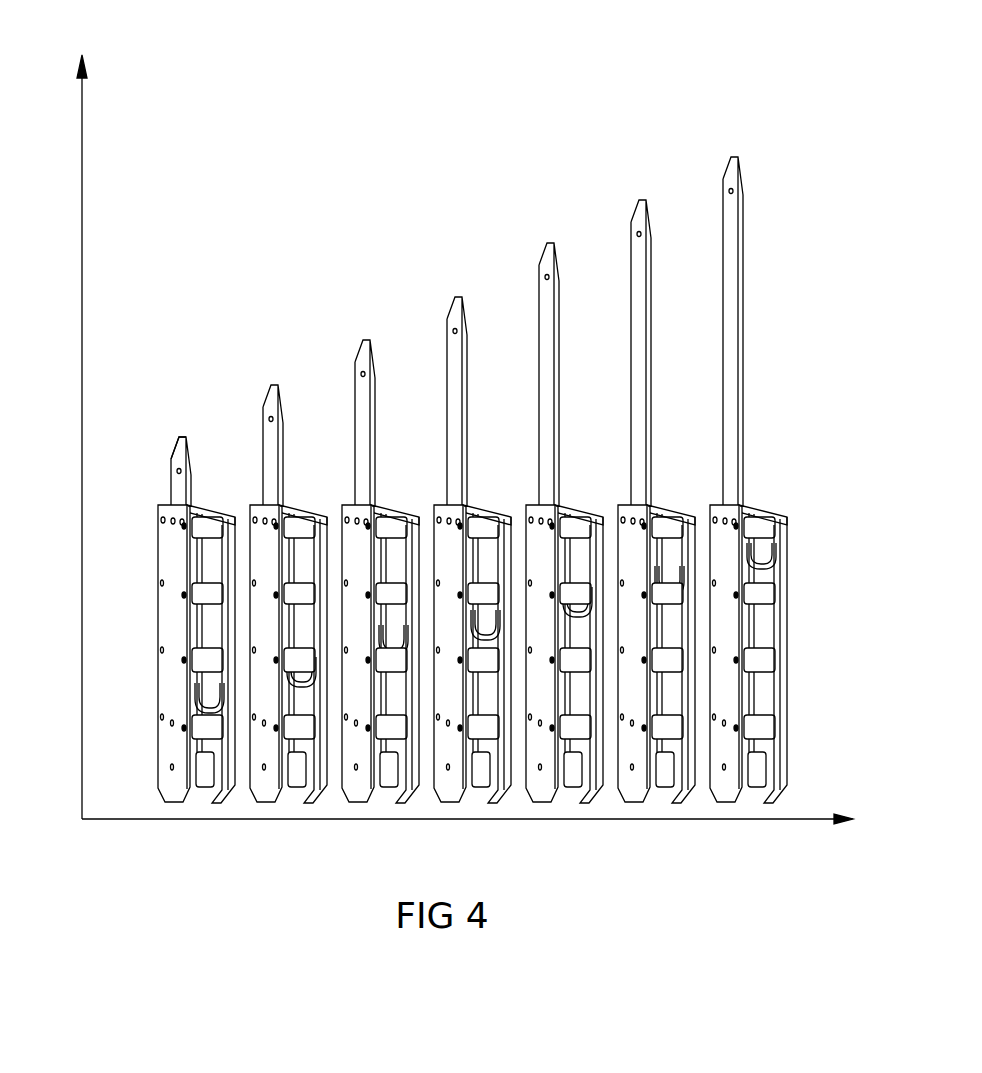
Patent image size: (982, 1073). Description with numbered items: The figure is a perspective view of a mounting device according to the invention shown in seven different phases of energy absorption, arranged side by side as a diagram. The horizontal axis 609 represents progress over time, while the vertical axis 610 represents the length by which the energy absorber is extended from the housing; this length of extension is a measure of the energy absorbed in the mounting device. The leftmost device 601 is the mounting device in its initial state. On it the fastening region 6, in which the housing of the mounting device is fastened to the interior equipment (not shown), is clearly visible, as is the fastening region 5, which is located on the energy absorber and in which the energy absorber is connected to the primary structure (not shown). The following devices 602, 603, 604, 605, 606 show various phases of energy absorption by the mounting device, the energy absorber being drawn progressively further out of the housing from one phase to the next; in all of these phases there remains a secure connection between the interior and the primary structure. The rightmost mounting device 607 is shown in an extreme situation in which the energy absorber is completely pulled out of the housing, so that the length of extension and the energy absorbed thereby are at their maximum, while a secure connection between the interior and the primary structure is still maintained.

The fastening region 5 is at (153, 458).
The fastening region 6 is at (175, 654).
The mounting device in initial state 601 is at (185, 423).
The phase of energy absorption 602 is at (274, 370).
The phase of energy absorption 603 is at (368, 325).
The phase of energy absorption 604 is at (460, 280).
The phase of energy absorption 605 is at (550, 228).
The phase of energy absorption 606 is at (643, 182).
The mounting device in extreme situation 607 is at (734, 136).
The horizontal axis 609 is at (631, 821).
The vertical axis 610 is at (82, 586).